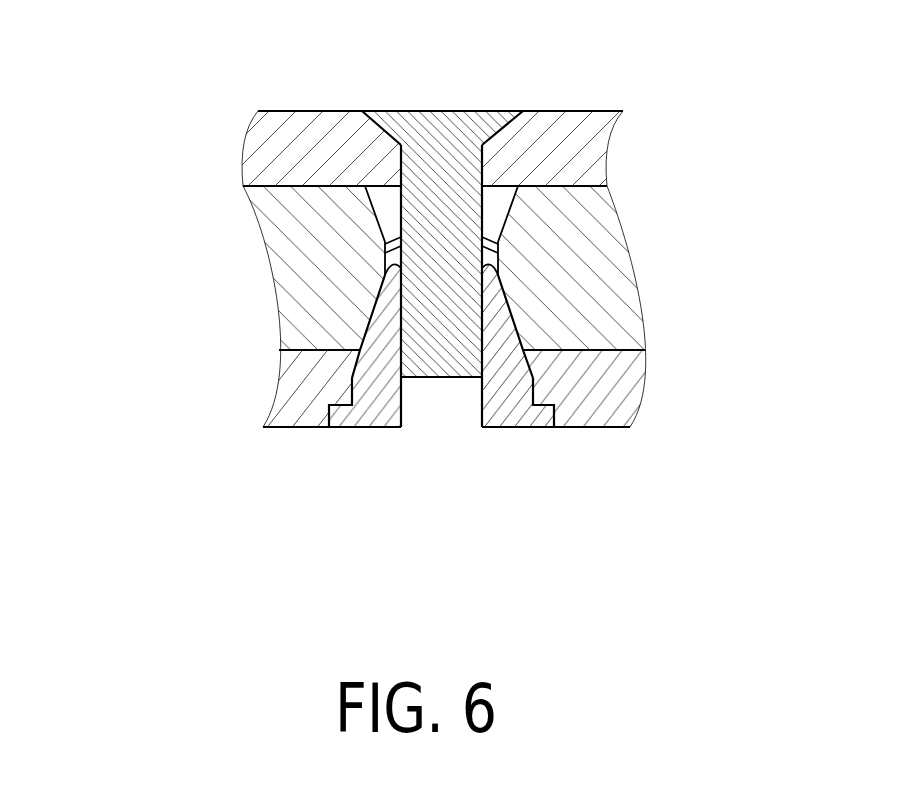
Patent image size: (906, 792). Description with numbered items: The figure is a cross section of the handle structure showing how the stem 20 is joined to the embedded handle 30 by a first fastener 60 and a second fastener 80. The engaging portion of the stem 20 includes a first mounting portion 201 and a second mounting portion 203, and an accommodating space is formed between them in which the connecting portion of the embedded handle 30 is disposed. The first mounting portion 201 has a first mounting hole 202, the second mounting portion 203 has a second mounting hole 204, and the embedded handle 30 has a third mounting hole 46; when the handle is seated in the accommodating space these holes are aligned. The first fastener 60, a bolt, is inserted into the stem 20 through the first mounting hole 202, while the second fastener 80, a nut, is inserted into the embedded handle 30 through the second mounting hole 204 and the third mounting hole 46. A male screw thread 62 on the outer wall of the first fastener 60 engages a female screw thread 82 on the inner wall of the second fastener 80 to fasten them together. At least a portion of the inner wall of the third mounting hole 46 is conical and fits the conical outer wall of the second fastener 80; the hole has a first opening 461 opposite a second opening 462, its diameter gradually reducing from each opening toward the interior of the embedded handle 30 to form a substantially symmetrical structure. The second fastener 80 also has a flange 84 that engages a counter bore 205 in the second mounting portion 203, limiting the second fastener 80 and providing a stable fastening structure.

The stem 20 is at (93, 138).
The first mounting portion 201 is at (270, 172).
The first mounting hole 202 is at (373, 137).
The second mounting portion 203 is at (292, 378).
The second mounting hole 204 is at (340, 393).
The counter bore 205 is at (313, 418).
The embedded handle 30 is at (633, 269).
The third mounting hole 46 is at (517, 208).
The first opening 461 is at (517, 160).
The second opening 462 is at (530, 353).
The first fastener 60 is at (445, 135).
The male screw thread 62 is at (466, 378).
The second fastener 80 is at (380, 403).
The female screw thread 82 is at (507, 385).
The flange 84 is at (542, 420).